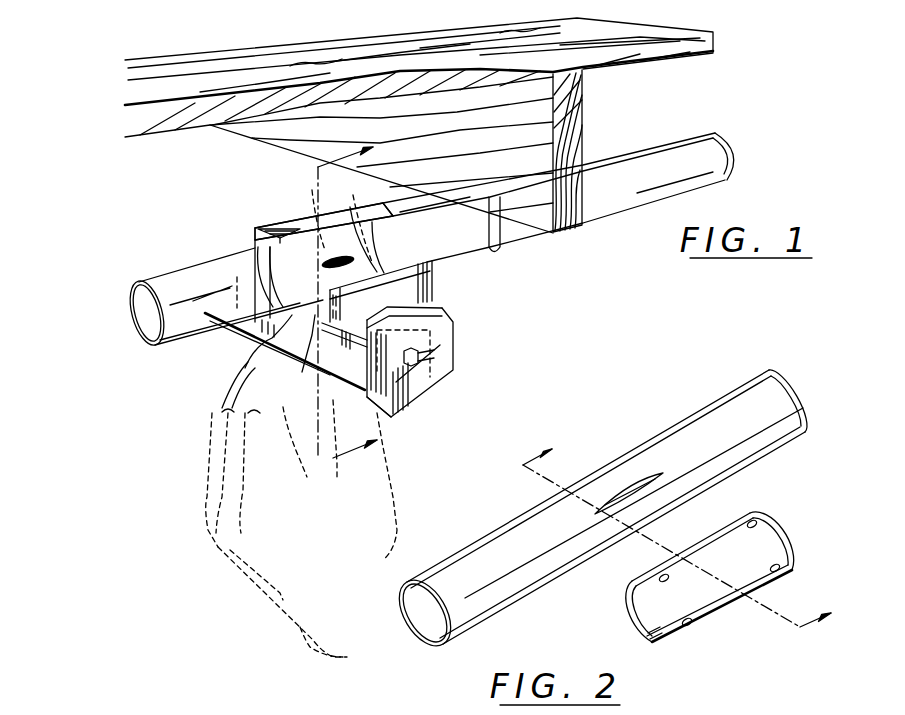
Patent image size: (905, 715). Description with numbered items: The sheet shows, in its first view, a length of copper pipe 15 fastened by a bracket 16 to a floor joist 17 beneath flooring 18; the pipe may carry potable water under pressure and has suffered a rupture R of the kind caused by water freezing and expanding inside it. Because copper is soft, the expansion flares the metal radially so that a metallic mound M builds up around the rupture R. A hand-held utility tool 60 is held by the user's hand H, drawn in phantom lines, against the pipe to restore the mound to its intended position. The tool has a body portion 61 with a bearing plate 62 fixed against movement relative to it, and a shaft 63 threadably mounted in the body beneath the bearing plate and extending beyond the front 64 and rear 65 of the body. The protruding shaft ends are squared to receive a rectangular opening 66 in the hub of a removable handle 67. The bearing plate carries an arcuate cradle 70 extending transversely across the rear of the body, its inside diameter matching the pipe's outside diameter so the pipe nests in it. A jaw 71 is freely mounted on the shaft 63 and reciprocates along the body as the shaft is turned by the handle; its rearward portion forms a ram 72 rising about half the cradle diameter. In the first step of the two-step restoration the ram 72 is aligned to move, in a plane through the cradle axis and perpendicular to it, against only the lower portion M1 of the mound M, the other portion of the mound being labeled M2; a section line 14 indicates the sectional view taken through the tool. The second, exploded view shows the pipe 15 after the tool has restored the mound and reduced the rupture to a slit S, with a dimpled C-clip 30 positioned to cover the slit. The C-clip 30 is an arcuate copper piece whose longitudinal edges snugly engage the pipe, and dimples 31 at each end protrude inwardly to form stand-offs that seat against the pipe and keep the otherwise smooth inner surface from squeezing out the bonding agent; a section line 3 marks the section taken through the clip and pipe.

In FIG. 1, the section line 14- 14 is at (365, 294).
In FIG. 1, the copper pipe 15 is at (202, 271).
In FIG. 2, the copper pipe 15 is at (692, 437).
In FIG. 1, the bracket 16 is at (504, 248).
In FIG. 1, the floor joist 17 is at (263, 136).
In FIG. 1, the flooring 18 is at (180, 128).
In FIG. 2, the dimpled C-clip 30 is at (732, 552).
In FIG. 2, the dimples 31 is at (662, 582).
In FIG. 2, the section line 3- 3 is at (688, 528).
In FIG. 1, the utility tool 60 is at (397, 341).
In FIG. 1, the body portion 61 is at (275, 333).
In FIG. 1, the bearing plate 62 is at (253, 250).
In FIG. 1, the shaft 63 is at (420, 352).
In FIG. 1, the front 64 is at (442, 309).
In FIG. 1, the rear 65 is at (228, 338).
In FIG. 1, the rectangular opening 66 is at (422, 366).
In FIG. 1, the removable handle 67 is at (425, 397).
In FIG. 1, the arcuate cradle 70 is at (383, 204).
In FIG. 1, the jaw 71 is at (433, 283).
In FIG. 1, the ram 72 is at (330, 280).
In FIG. 1, the metallic mound M is at (304, 230).
In FIG. 1, the lower portion of the mound M1 is at (360, 267).
In FIG. 1, the marking M2 is at (340, 256).
In FIG. 1, the rupture R is at (335, 222).
In FIG. 2, the slit S is at (622, 492).
In FIG. 1, the user's hand H is at (218, 547).